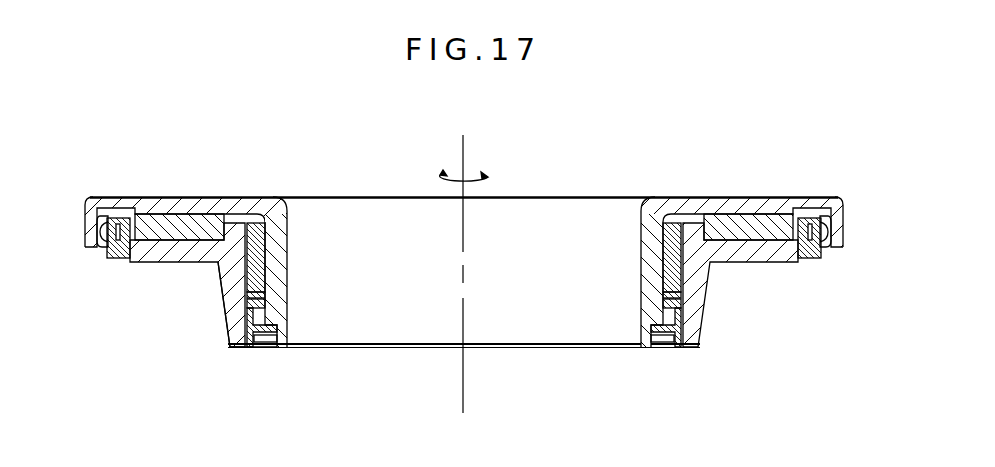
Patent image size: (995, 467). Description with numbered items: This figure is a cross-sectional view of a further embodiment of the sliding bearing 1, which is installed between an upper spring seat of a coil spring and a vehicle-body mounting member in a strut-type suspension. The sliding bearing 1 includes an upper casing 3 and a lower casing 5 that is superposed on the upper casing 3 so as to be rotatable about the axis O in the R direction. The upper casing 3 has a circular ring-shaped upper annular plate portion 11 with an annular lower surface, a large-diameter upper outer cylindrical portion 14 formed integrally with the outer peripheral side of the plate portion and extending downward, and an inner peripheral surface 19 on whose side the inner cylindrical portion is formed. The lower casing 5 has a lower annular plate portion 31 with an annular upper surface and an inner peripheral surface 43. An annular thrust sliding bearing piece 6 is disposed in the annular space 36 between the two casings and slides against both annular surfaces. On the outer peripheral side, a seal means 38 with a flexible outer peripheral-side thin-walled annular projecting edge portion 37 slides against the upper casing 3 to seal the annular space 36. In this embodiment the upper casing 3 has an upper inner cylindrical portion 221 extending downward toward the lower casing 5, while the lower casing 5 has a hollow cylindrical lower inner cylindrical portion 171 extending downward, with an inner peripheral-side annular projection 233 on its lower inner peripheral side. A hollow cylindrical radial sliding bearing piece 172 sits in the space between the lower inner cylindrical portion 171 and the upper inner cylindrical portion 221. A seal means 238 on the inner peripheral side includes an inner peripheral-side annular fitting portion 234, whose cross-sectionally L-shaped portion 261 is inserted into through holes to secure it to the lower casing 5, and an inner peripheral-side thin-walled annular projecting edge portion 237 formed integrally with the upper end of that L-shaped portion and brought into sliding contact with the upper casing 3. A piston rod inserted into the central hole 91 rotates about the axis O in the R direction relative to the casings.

The sliding bearing 1 is at (88, 197).
The upper casing 3 is at (664, 207).
The lower casing 5 is at (750, 263).
The thrust sliding bearing piece 6 is at (191, 216).
The upper annular plate portion 11 is at (157, 201).
The upper outer cylindrical portion 14 is at (92, 225).
The inner peripheral surface 19 is at (284, 202).
The lower annular plate portion 31 is at (157, 263).
The annular space 36 is at (700, 216).
The outer peripheral-side thin-walled annular projecting edge portion 37 is at (838, 227).
The seal means 38 is at (108, 259).
The inner peripheral surface 43 is at (252, 213).
The central hole 91 is at (464, 318).
The lower inner cylindrical portion 171 is at (222, 310).
The radial sliding bearing piece 172 is at (262, 275).
The upper inner cylindrical portion 221 is at (288, 247).
The inner peripheral-side annular projection 233 is at (278, 328).
The inner peripheral-side annular fitting portion 234 is at (243, 329).
The inner peripheral-side thin-walled annular projecting edge portion 237 is at (264, 312).
The seal means 238 is at (250, 349).
The cross-sectionally L-shaped portion 261 is at (674, 349).
The axis O is at (467, 150).
The R direction R is at (490, 178).